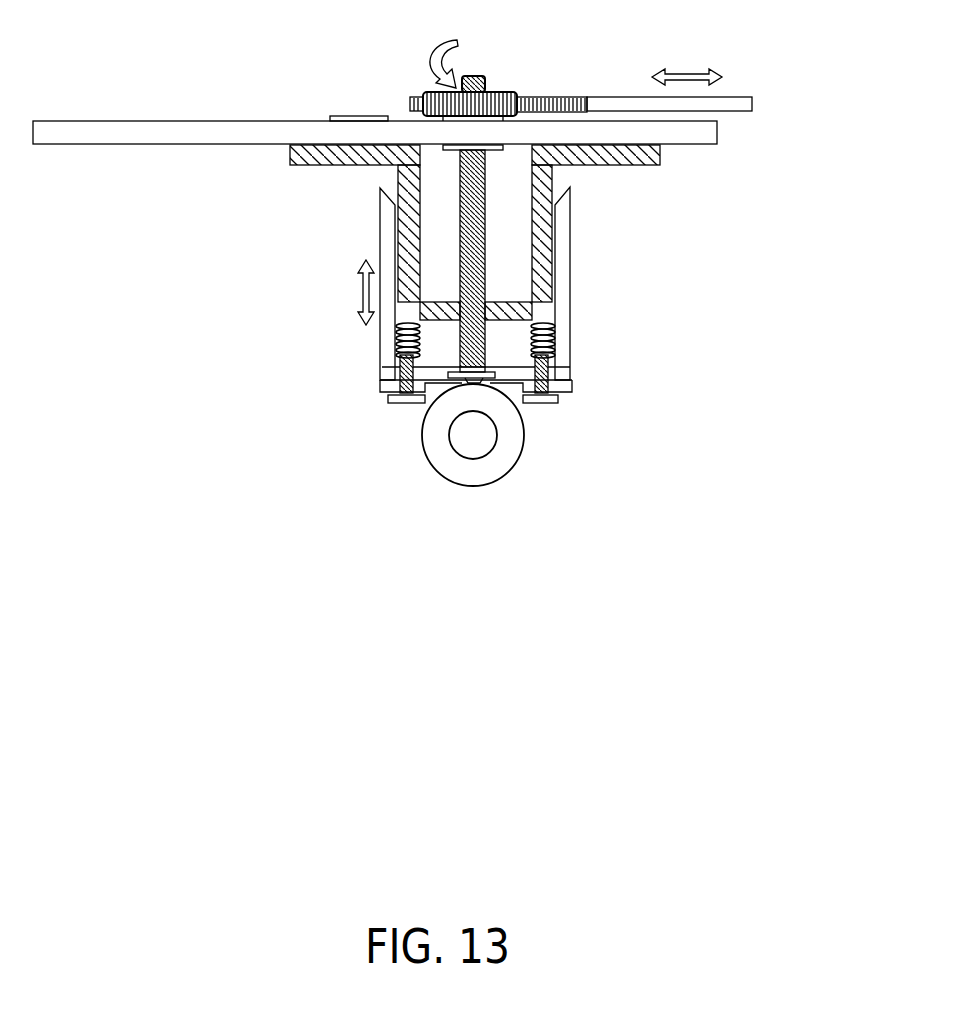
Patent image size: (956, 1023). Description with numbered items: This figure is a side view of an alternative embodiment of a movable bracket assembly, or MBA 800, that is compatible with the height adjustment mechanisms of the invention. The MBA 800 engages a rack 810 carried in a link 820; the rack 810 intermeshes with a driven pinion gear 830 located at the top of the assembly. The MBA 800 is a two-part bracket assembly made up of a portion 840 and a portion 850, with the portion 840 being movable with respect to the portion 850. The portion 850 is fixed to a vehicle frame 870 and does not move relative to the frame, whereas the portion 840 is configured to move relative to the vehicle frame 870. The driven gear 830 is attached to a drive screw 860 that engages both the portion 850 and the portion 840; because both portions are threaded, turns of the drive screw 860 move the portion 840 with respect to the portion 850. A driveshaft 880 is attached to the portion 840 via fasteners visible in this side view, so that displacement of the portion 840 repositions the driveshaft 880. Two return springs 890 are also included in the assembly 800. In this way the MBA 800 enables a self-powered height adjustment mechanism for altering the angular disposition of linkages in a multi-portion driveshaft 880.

The movable bracket assembly 800 is at (795, 65).
The rack 810 is at (547, 98).
The link 820 is at (733, 97).
The driven gear 830 is at (424, 94).
The portion 840 is at (562, 243).
The portion 850 is at (553, 173).
The drive screw 860 is at (472, 76).
The vehicle frame 870 is at (178, 135).
The driveshaft 880 is at (483, 440).
The return springs 890 is at (395, 343).